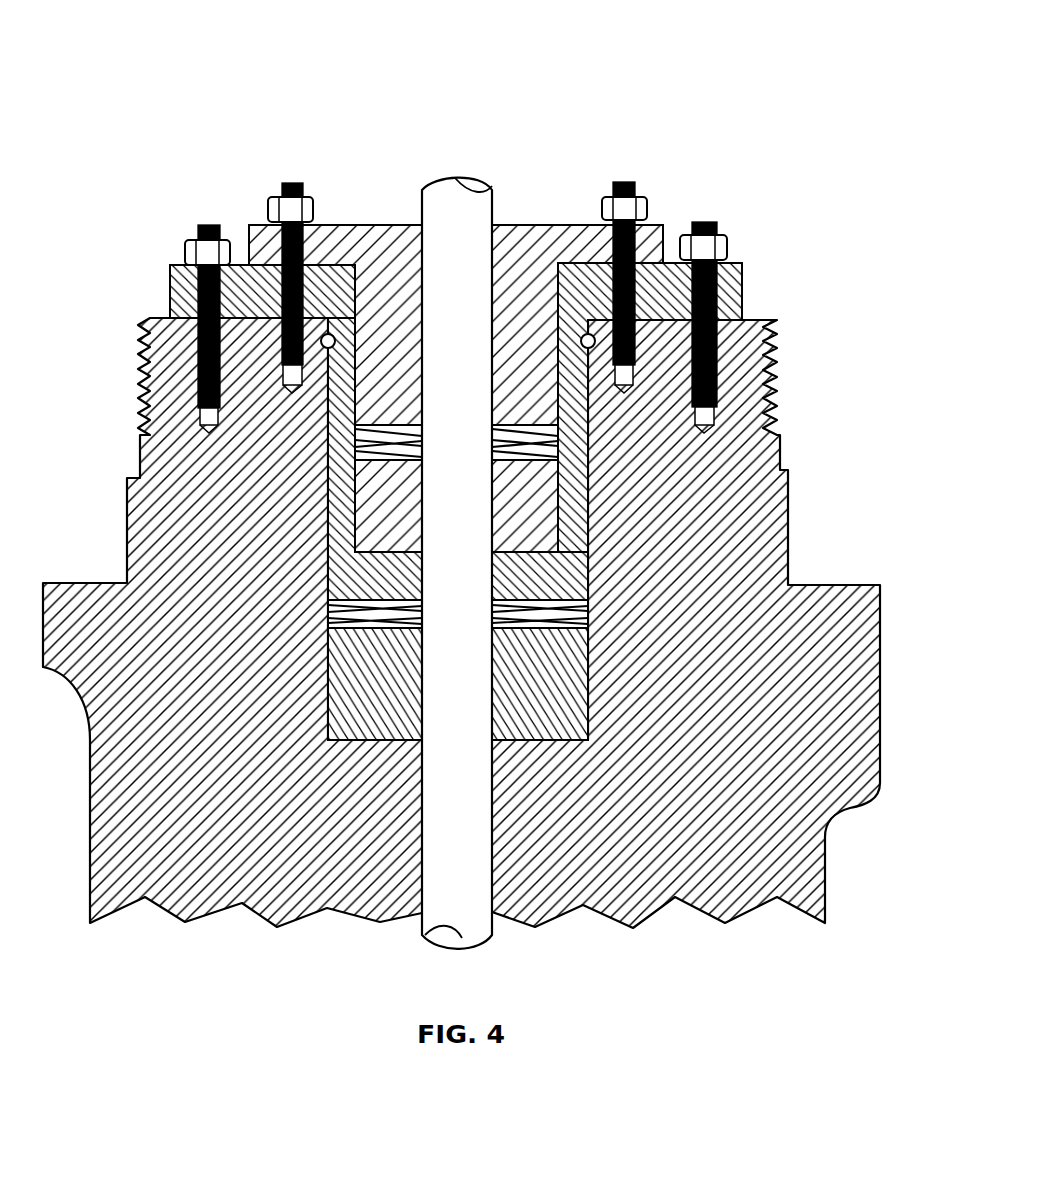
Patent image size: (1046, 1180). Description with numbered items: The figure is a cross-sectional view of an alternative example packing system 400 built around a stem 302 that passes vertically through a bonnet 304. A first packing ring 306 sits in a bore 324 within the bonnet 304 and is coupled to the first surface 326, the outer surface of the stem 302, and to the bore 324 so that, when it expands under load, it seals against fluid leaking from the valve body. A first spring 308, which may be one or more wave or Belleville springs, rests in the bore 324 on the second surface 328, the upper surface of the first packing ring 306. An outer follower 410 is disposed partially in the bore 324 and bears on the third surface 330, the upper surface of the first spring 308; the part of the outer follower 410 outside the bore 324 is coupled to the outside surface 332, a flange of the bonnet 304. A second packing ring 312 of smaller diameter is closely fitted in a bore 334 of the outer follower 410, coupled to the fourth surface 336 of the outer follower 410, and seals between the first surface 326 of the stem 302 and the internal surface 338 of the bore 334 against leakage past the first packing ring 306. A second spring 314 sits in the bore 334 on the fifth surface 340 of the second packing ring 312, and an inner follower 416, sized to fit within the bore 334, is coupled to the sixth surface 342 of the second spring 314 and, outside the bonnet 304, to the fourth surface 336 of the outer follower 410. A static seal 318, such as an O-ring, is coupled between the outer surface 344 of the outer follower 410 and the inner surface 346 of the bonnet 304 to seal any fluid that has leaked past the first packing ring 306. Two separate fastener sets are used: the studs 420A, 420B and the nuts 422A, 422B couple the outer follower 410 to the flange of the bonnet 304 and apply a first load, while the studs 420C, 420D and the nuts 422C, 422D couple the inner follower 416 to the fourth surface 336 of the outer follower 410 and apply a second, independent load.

The packing system 400 is at (733, 52).
The stem 302 is at (440, 178).
The bonnet 304 is at (830, 585).
The first packing ring 306 is at (567, 700).
The first spring 308 is at (590, 622).
The second packing ring 312 is at (553, 510).
The second spring 314 is at (512, 424).
The static seal 318 is at (590, 349).
The bore 324 is at (592, 736).
The first surface 326 is at (420, 736).
The second surface 328 is at (326, 620).
The third surface 330 is at (582, 592).
The outside surface 332 is at (755, 318).
The bore 334 is at (348, 524).
The fourth surface 336 is at (248, 262).
The internal surface 338 is at (562, 540).
The fifth surface 340 is at (562, 462).
The sixth surface 342 is at (543, 424).
The outer surface 344 is at (335, 322).
The inner surface 346 is at (328, 349).
The outer follower 410 is at (566, 585).
The inner follower 416 is at (548, 313).
The stud 420A is at (205, 227).
The stud 420B is at (705, 222).
The stud 420C is at (290, 183).
The stud 420D is at (623, 182).
The nut 422A is at (183, 251).
The nut 422B is at (728, 250).
The nut 422C is at (312, 215).
The nut 422D is at (648, 210).